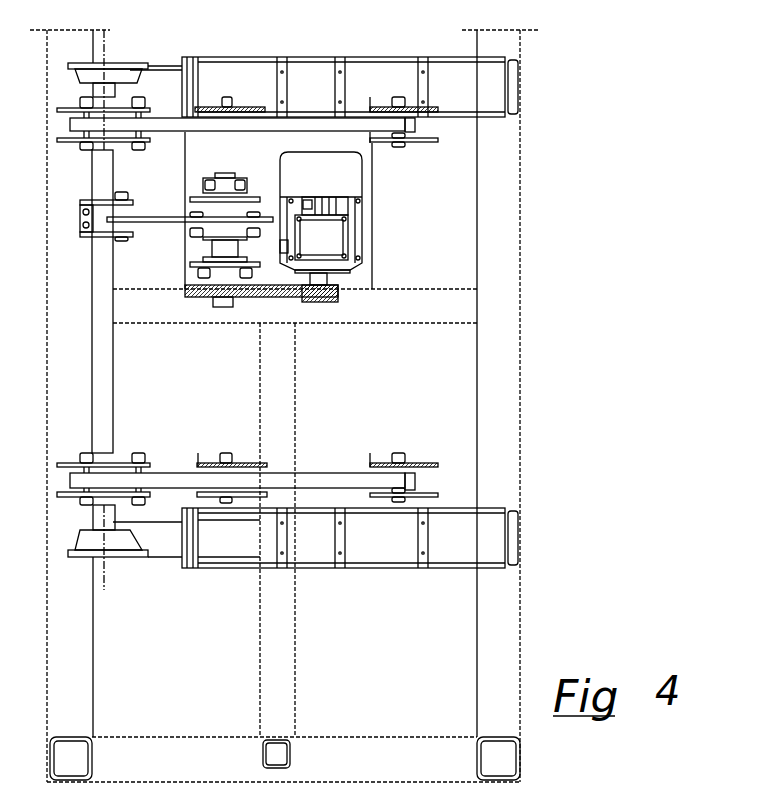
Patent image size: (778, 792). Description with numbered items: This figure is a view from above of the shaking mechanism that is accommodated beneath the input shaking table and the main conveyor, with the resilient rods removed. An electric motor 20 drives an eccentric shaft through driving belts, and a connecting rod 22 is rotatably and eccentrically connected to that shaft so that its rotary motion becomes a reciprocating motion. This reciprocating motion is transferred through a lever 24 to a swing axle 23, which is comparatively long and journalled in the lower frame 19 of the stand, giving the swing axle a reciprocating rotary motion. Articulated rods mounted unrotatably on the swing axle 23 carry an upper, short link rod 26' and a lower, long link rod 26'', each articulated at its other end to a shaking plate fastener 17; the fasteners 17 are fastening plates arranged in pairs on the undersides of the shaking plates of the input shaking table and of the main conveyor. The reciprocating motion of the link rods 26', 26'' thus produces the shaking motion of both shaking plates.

The shaking plate fastener 17 is at (430, 142).
The lower frame 19 is at (343, 743).
The electric motor 20 is at (352, 233).
The connecting rod 22 is at (165, 216).
The swing axle 23 is at (108, 338).
The lever 24 is at (110, 237).
The upper, short link rod 26' is at (242, 258).
The lower, long link rod 26'' is at (350, 297).